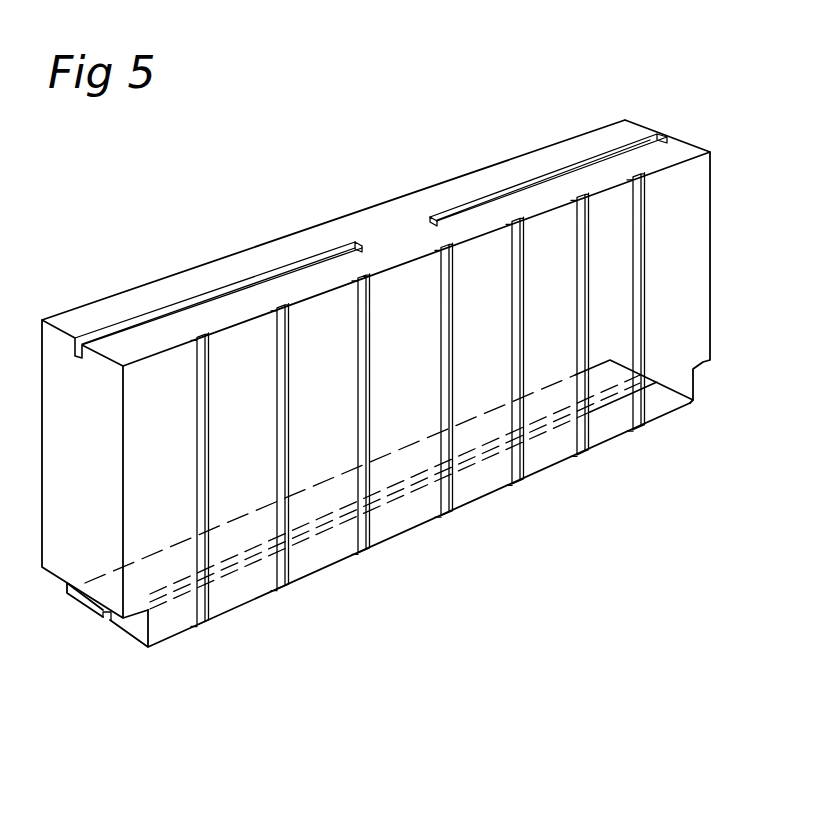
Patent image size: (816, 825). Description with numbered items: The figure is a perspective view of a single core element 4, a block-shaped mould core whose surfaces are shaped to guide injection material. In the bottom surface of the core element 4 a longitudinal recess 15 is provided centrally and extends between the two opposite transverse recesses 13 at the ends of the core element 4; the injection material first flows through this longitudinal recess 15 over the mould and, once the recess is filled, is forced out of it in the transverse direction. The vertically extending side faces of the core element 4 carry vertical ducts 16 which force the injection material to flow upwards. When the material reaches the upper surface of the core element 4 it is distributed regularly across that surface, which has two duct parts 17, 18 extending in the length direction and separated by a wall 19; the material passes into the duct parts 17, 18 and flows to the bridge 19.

The core element 4 is at (437, 152).
The transverse recess 13 is at (700, 377).
The longitudinal recess 15 is at (108, 617).
The vertical duct 16 is at (202, 600).
The duct part 17 is at (90, 336).
The duct part 18 is at (634, 148).
The wall (bridge) 19 is at (384, 227).